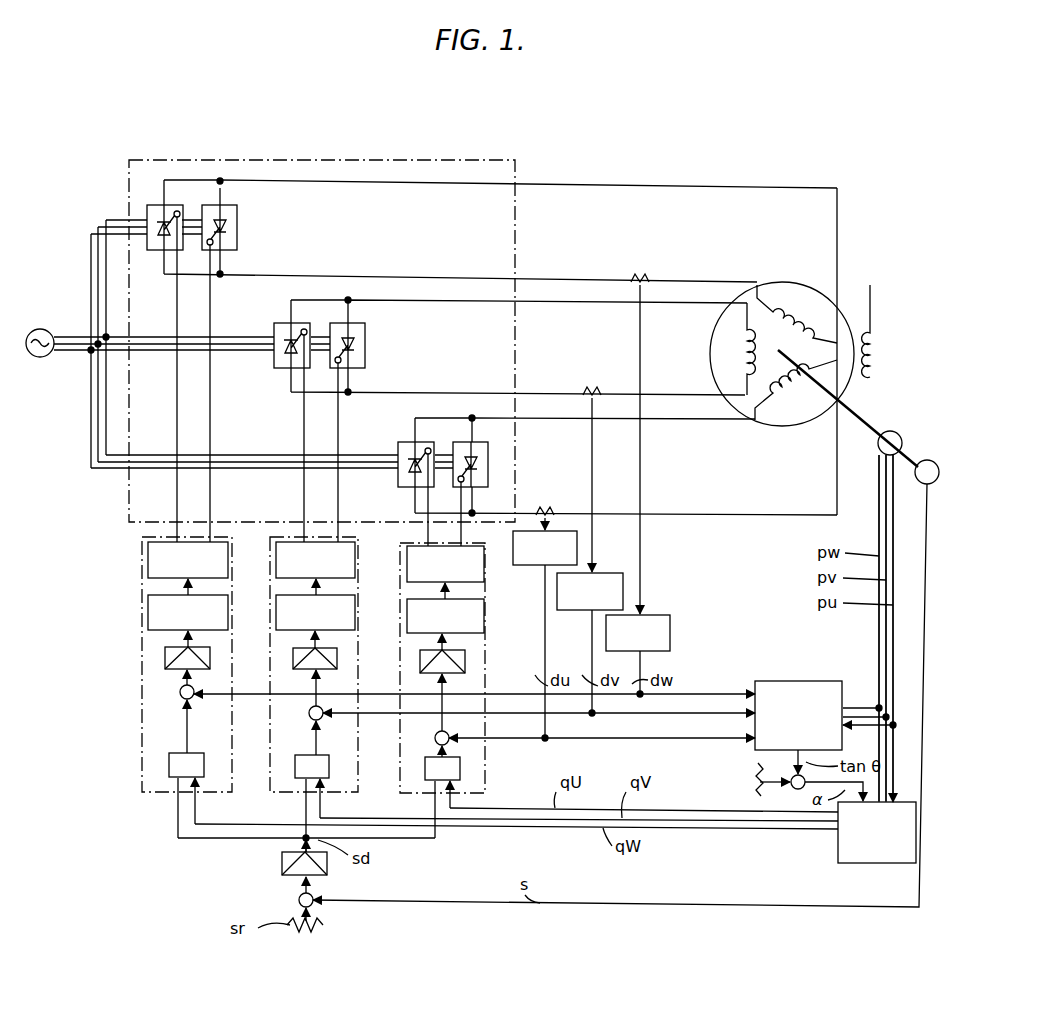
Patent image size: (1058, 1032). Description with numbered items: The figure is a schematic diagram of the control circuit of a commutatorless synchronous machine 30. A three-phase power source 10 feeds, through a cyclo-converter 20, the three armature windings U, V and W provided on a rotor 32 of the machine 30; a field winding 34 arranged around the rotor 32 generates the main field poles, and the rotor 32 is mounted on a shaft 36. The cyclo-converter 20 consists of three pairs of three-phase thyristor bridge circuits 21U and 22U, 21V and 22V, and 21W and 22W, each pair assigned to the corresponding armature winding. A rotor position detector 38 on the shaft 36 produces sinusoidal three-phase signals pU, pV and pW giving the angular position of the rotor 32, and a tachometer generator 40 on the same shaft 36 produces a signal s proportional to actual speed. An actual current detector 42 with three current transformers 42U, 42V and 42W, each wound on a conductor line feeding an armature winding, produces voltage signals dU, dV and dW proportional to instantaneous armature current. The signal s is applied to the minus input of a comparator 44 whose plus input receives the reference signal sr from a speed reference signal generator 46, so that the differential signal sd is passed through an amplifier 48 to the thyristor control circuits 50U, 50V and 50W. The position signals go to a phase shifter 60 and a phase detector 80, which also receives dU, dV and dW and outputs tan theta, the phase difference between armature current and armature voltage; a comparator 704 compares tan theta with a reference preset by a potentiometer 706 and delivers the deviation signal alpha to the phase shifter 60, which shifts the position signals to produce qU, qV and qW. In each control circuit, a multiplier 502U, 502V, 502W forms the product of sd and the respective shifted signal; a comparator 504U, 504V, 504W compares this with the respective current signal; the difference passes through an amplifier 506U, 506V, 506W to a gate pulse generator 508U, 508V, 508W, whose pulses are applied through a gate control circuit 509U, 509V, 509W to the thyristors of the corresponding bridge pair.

The three-phase power source 10 is at (43, 329).
The cyclo-converter 20 is at (350, 160).
The three-phase thyristor bridge circuit 21W is at (152, 251).
The three-phase thyristor bridge circuit 22W is at (237, 230).
The three-phase thyristor bridge circuit 21V is at (280, 368).
The three-phase thyristor bridge circuit 22V is at (365, 352).
The three-phase thyristor bridge circuit 21U is at (396, 445).
The three-phase thyristor bridge circuit 22U is at (452, 440).
The commutatorless synchronous machine 30 is at (782, 351).
The rotor 32 is at (770, 426).
The field winding 34 is at (877, 354).
The shaft 36 is at (857, 408).
The rotor position detector 38 is at (898, 432).
The tachometer generator 40 is at (929, 460).
The actual current detector 42 is at (690, 588).
The current transformer 42U is at (535, 567).
The current transformer 42V is at (585, 612).
The current transformer 42W is at (671, 632).
The comparator 44 is at (299, 900).
The speed reference signal generator 46 is at (323, 925).
The amplifier 48 is at (282, 862).
The thyristor control circuit 50W is at (151, 687).
The thyristor control circuit 50V is at (279, 687).
The thyristor control circuit 50U is at (404, 680).
The multiplier 502W is at (169, 765).
The multiplier 502V is at (304, 792).
The multiplier 502U is at (432, 793).
The comparator 504W is at (180, 695).
The comparator 504V is at (309, 716).
The comparator 504U is at (430, 737).
The amplifier 506W is at (165, 660).
The amplifier 506V is at (293, 662).
The amplifier 506U is at (420, 665).
The gate pulse generator 508W is at (148, 622).
The gate pulse generator 508V is at (276, 618).
The gate pulse generator 508U is at (407, 622).
The gate control circuit 509W is at (148, 559).
The gate control circuit 509V is at (276, 560).
The gate control circuit 509U is at (407, 560).
The phase shifter 60 is at (840, 864).
The phase detector 80 is at (795, 681).
The comparator 704 is at (800, 790).
The potentiometer 706 is at (756, 780).